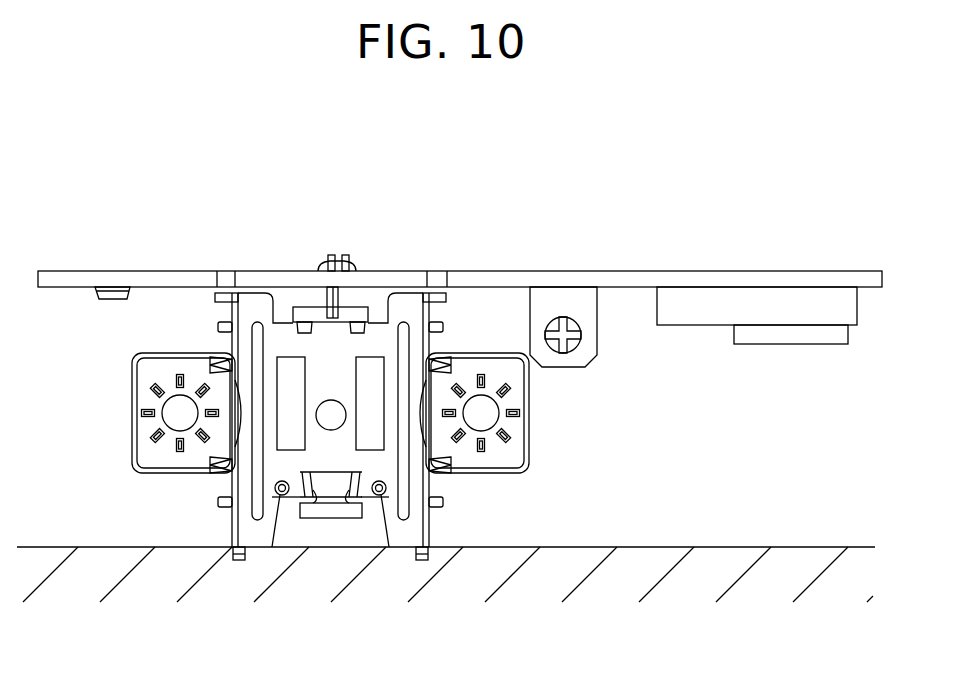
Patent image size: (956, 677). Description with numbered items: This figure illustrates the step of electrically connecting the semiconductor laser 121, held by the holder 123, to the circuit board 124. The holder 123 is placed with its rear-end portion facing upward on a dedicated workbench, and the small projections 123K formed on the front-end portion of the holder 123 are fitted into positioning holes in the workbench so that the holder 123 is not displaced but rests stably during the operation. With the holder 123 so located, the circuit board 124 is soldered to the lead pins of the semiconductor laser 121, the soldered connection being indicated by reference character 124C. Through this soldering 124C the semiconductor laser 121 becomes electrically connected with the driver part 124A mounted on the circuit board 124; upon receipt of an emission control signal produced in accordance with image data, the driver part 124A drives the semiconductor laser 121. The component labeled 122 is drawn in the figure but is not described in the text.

The semiconductor laser 121 is at (343, 522).
The holder component 122 is at (304, 305).
The holder 123 is at (532, 432).
The small projection 123K is at (238, 562).
The circuit board 124 is at (645, 271).
The driver part 124A is at (112, 301).
The soldering 124C is at (351, 268).